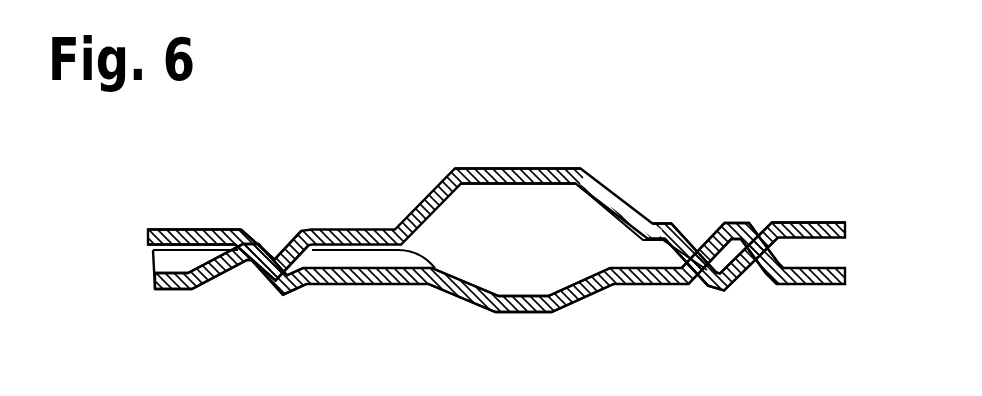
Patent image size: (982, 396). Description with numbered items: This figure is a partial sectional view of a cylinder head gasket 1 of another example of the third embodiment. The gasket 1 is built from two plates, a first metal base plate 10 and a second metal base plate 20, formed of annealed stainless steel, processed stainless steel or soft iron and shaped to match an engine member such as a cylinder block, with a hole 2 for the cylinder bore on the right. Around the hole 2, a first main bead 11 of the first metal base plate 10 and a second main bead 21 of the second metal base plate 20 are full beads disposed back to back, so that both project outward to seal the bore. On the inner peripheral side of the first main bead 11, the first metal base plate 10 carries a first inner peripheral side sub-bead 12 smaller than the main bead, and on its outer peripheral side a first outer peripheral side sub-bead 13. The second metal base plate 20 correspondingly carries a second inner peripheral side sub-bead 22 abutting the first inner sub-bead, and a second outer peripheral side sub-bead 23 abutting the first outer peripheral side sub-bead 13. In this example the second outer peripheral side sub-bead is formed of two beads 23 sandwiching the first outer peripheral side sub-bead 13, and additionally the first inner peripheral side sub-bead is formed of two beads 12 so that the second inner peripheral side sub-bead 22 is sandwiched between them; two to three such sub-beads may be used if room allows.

The cylinder head gasket 1 is at (632, 184).
The first metal base plate 10 is at (203, 228).
The first main bead 11 is at (523, 167).
The first inner peripheral side sub-bead 12 is at (698, 236).
The first outer peripheral side sub-bead 13 is at (286, 237).
The hole for cylinder bore 2 is at (905, 268).
The second metal base plate 20 is at (171, 290).
The second main bead 21 is at (517, 313).
The second inner peripheral side sub-bead 22 is at (745, 270).
The second outer peripheral side sub-bead 23 is at (238, 291).